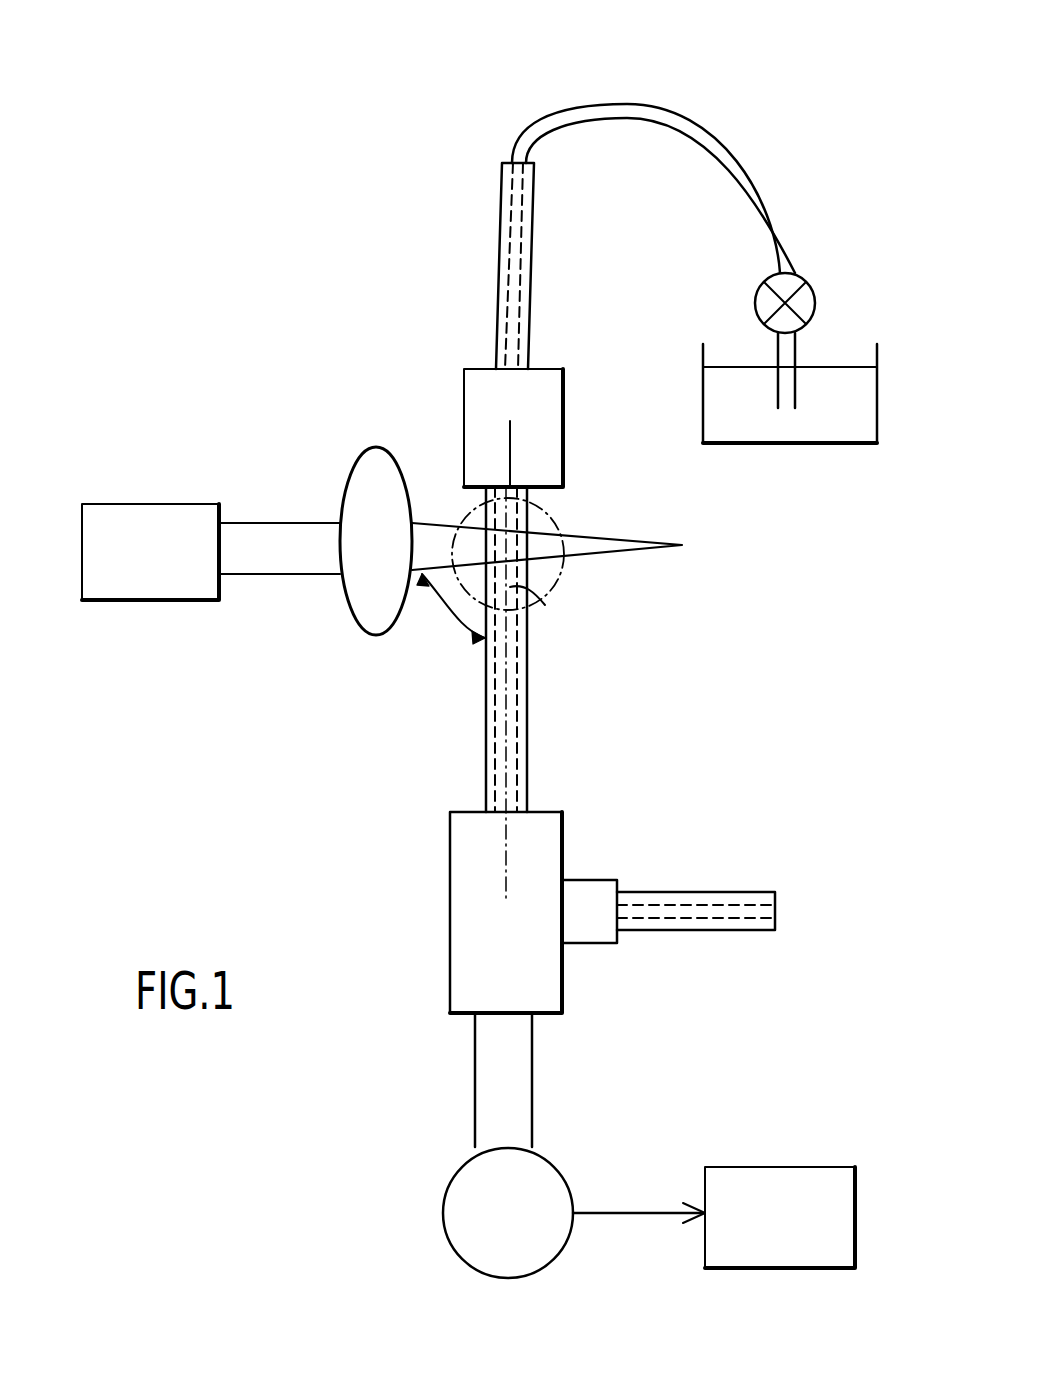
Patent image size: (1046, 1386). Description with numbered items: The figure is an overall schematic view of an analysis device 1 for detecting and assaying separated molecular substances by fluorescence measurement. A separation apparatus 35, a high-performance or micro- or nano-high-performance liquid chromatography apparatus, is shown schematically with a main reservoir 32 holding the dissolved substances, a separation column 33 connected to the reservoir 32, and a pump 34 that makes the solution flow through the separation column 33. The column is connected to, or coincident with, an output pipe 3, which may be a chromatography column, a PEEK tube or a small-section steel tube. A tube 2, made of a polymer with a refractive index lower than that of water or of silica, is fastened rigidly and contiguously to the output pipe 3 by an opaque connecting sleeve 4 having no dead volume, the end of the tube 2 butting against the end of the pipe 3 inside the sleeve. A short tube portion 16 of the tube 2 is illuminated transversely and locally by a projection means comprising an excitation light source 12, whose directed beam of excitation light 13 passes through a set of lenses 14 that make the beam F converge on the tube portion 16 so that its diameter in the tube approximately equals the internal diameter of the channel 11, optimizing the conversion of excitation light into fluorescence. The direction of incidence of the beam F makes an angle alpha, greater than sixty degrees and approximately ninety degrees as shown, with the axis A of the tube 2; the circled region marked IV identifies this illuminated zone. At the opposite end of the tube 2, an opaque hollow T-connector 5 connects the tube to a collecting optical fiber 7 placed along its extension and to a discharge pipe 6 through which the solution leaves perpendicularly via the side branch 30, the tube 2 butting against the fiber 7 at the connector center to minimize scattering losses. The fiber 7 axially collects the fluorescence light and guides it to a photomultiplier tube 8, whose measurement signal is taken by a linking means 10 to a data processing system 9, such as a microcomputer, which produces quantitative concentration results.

The analysis device 1 is at (339, 395).
The tube 2 is at (527, 670).
The output pipe 3 is at (533, 285).
The connecting sleeve 4 is at (565, 422).
The T-connector 5 is at (450, 866).
The discharge pipe 6 is at (747, 892).
The collecting optical fiber 7 is at (532, 1088).
The photomultiplier tube 8 is at (448, 1230).
The data processing system 9 is at (812, 1167).
The linking means 10 is at (628, 1217).
The channel 11 is at (507, 738).
The excitation light source 12 is at (140, 504).
The beam of excitation light 13 is at (245, 574).
The set of lenses 14 is at (345, 480).
The tube portion 16 is at (493, 548).
The side branch 30 is at (600, 880).
The main reservoir 32 is at (833, 445).
The separation column 33 is at (670, 115).
The pump 34 is at (813, 297).
The separation apparatus 35 is at (775, 134).
The axis A is at (547, 605).
The beam F is at (643, 532).
The section IV is at (553, 522).
The angle alpha is at (445, 615).